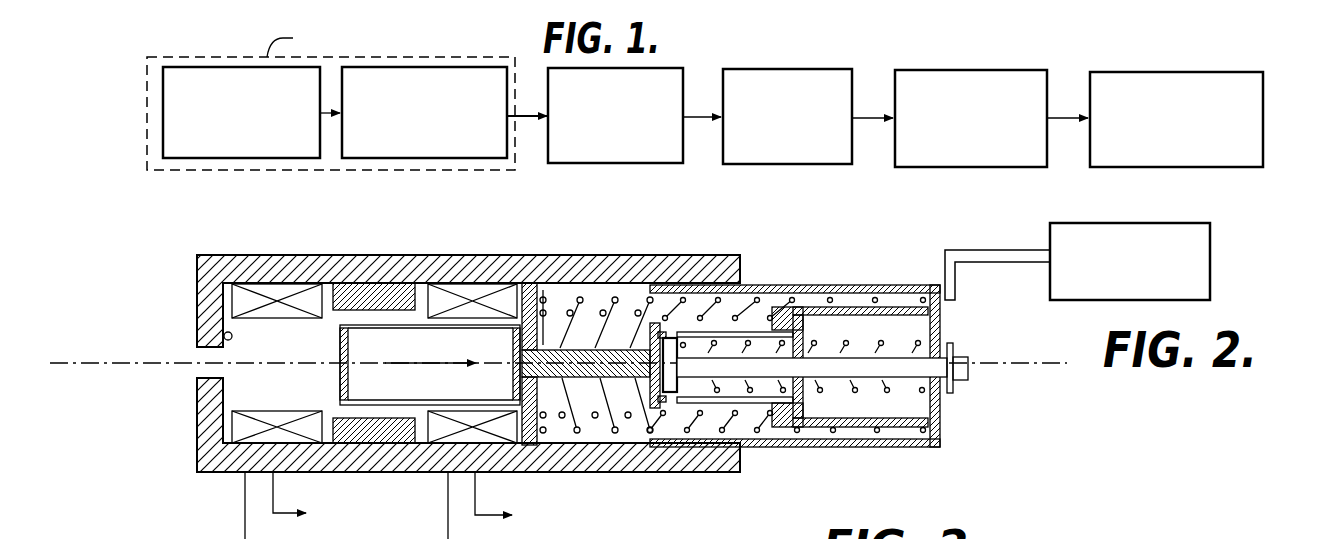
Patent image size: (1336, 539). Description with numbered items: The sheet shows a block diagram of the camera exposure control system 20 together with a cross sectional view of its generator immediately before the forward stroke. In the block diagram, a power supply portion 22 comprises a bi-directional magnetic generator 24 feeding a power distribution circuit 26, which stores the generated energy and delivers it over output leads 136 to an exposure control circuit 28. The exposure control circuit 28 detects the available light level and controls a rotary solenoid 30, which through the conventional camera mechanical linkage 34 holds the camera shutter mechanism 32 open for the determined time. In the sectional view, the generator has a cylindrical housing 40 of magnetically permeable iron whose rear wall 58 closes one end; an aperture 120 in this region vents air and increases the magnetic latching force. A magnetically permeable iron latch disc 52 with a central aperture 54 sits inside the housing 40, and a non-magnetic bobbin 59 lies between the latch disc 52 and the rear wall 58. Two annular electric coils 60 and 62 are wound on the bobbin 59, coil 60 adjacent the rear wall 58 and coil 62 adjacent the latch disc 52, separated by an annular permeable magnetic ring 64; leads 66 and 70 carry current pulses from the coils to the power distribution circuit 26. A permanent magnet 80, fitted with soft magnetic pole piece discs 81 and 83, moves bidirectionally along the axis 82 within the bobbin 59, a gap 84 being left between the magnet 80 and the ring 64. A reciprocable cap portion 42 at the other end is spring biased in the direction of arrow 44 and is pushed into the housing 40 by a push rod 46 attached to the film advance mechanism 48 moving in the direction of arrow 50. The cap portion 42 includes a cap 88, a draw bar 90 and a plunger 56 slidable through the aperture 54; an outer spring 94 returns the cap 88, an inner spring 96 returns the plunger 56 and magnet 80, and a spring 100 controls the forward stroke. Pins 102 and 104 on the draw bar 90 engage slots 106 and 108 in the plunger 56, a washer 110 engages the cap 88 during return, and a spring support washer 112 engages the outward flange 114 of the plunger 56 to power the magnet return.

In FIG. 1, the camera exposure control system 20 is at (751, 51).
In FIG. 1, the power supply portion 22 is at (371, 172).
In FIG. 1, the magnetic generator 24 is at (250, 160).
In FIG. 2, the magnetic generator 24 is at (630, 366).
In FIG. 1, the power distribution circuit 26 is at (450, 160).
In FIG. 1, the exposure control circuit 28 is at (608, 163).
In FIG. 1, the rotary solenoid 30 is at (765, 164).
In FIG. 1, the camera shutter mechanism 32 is at (1247, 72).
In FIG. 1, the camera mechanical linkage 34 is at (987, 70).
In FIG. 1, the output leads 136 is at (531, 118).
In FIG. 2, the cylindrical housing 40 is at (400, 262).
In FIG. 2, the cap portion 42 is at (884, 288).
In FIG. 2, the arrow 44 is at (829, 473).
In FIG. 2, the push rod 46 is at (1008, 250).
In FIG. 2, the film advance mechanism 48 is at (1162, 223).
In FIG. 2, the arrow 50 is at (822, 260).
In FIG. 2, the iron latch disc 52 is at (532, 283).
In FIG. 2, the aperture 54 is at (552, 335).
In FIG. 2, the plunger 56 is at (713, 325).
In FIG. 2, the rear wall 58 is at (222, 338).
In FIG. 2, the bobbin 59 is at (327, 288).
In FIG. 2, the annular electric coil 60 is at (273, 288).
In FIG. 2, the annular electric coil 62 is at (490, 288).
In FIG. 2, the annular permeable magnetic ring 64 is at (373, 288).
In FIG. 2, the lead 66 is at (280, 512).
In FIG. 2, the lead 70 is at (491, 489).
In FIG. 2, the permanent magnet 80 is at (413, 365).
In FIG. 2, the disc 81 is at (340, 350).
In FIG. 2, the axis 82 is at (110, 363).
In FIG. 2, the disc 83 is at (513, 375).
In FIG. 2, the gap 84 is at (366, 317).
In FIG. 2, the cap 88 is at (945, 408).
In FIG. 2, the draw bar 90 is at (945, 347).
In FIG. 2, the outer spring 94 is at (583, 307).
In FIG. 2, the inner spring 96 is at (602, 410).
In FIG. 2, the spring 100 is at (802, 367).
In FIG. 2, the pin 102 is at (683, 322).
In FIG. 2, the pin 104 is at (661, 417).
In FIG. 2, the slot 106 is at (750, 310).
In FIG. 2, the slot 108 is at (740, 407).
In FIG. 2, the washer 110 is at (957, 350).
In FIG. 2, the spring support washer 112 is at (783, 308).
In FIG. 2, the outward flange 114 is at (797, 317).
In FIG. 2, the aperture 120 is at (212, 367).